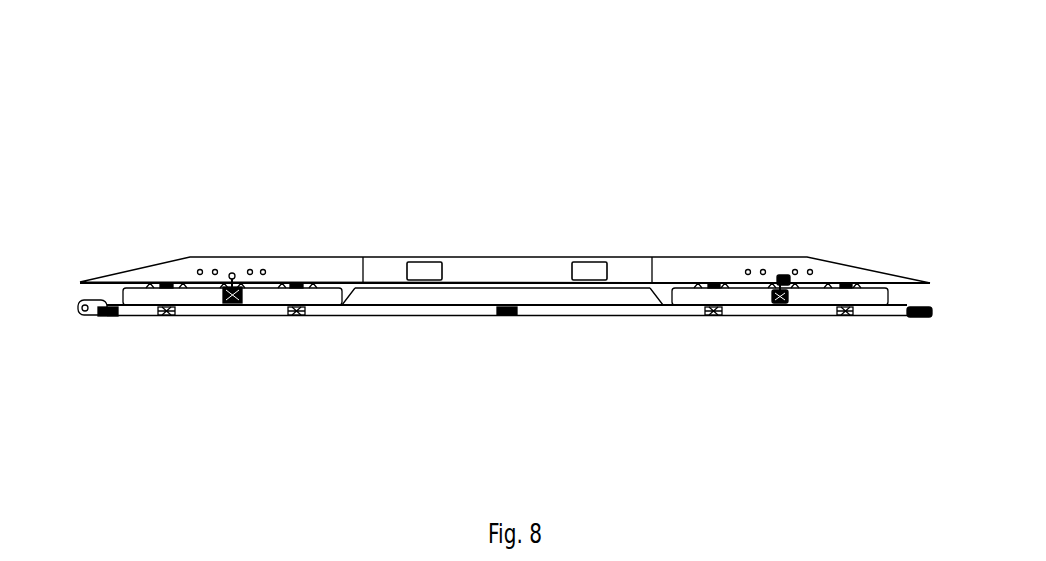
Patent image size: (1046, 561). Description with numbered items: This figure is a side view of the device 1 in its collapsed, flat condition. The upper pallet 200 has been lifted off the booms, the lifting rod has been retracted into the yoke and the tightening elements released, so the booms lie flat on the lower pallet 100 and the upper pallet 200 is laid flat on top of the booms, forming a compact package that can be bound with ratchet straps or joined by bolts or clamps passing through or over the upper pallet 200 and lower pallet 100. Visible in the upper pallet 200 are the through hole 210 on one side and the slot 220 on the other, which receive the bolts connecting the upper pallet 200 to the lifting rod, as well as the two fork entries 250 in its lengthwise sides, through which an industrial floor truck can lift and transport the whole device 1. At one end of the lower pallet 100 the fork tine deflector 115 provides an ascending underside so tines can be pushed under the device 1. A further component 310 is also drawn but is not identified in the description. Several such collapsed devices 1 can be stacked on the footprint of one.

The device 1 is at (624, 207).
The lower pallet 100 is at (583, 309).
The fork tine deflector 115 is at (82, 321).
The upper pallet 200 is at (633, 268).
The through hole 210 is at (232, 276).
The slot 220 is at (790, 275).
The fork entries 250 is at (592, 266).
The slide rail 310 is at (828, 307).